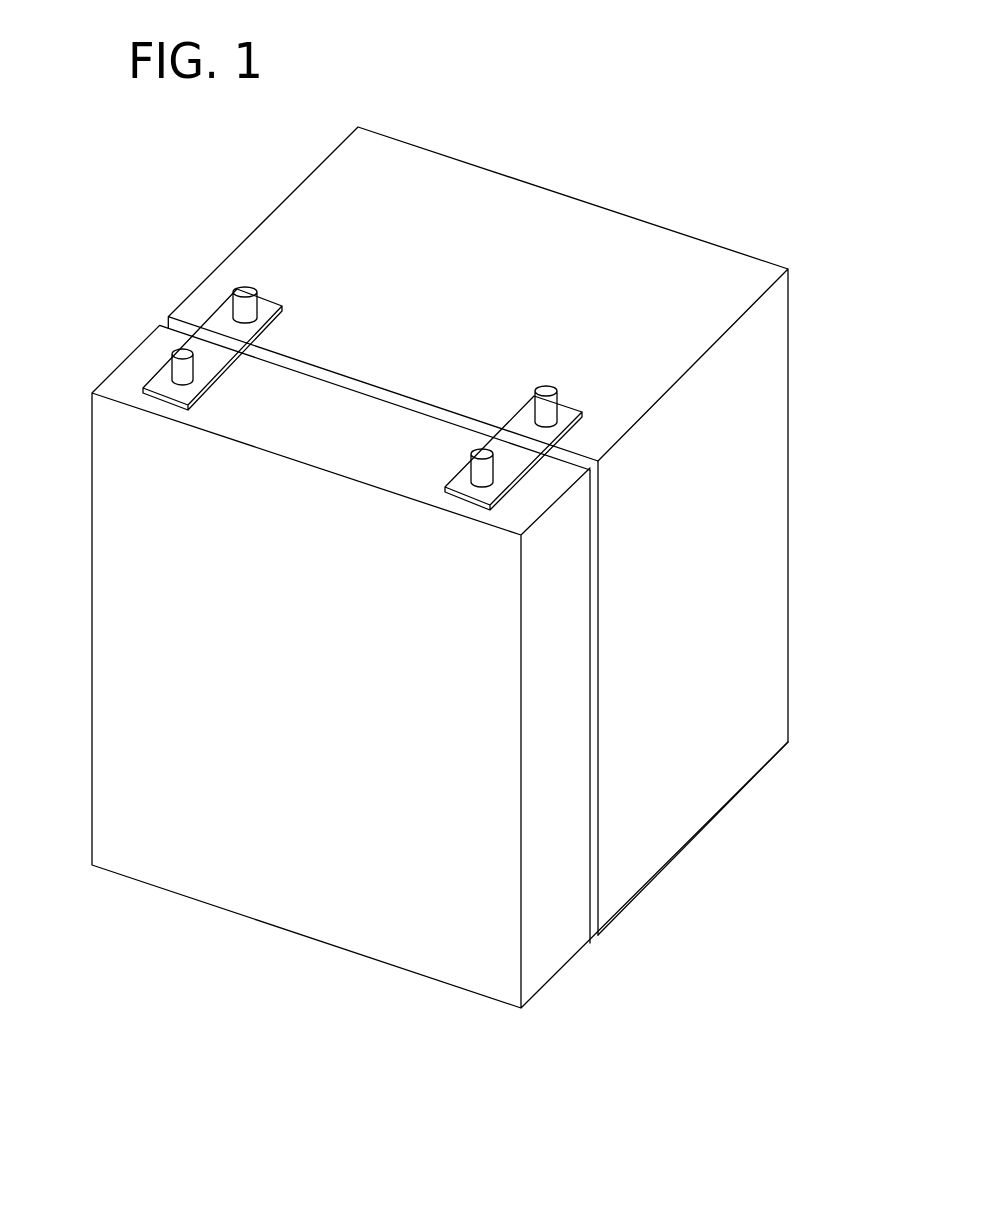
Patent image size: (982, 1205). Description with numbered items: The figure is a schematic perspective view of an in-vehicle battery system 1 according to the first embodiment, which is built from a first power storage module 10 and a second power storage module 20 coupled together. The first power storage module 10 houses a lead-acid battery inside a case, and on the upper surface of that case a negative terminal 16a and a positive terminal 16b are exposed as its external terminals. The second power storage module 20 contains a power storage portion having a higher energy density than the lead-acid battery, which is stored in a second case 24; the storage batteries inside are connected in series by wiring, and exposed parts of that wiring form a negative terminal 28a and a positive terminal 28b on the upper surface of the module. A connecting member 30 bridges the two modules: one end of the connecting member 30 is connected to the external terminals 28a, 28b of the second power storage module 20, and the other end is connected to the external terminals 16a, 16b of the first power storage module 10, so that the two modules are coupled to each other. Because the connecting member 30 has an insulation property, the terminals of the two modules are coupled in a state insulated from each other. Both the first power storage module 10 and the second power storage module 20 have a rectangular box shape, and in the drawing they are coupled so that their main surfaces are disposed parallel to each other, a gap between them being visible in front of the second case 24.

The in-vehicle battery system 1 is at (455, 615).
The first power storage module 10 is at (455, 577).
The second power storage module 20 is at (118, 357).
The second case 24 is at (572, 960).
The connecting member 30 is at (213, 313).
The negative terminal 16a is at (248, 287).
The positive terminal 16b is at (546, 386).
The negative terminal 28a is at (171, 364).
The positive terminal 28b is at (494, 458).